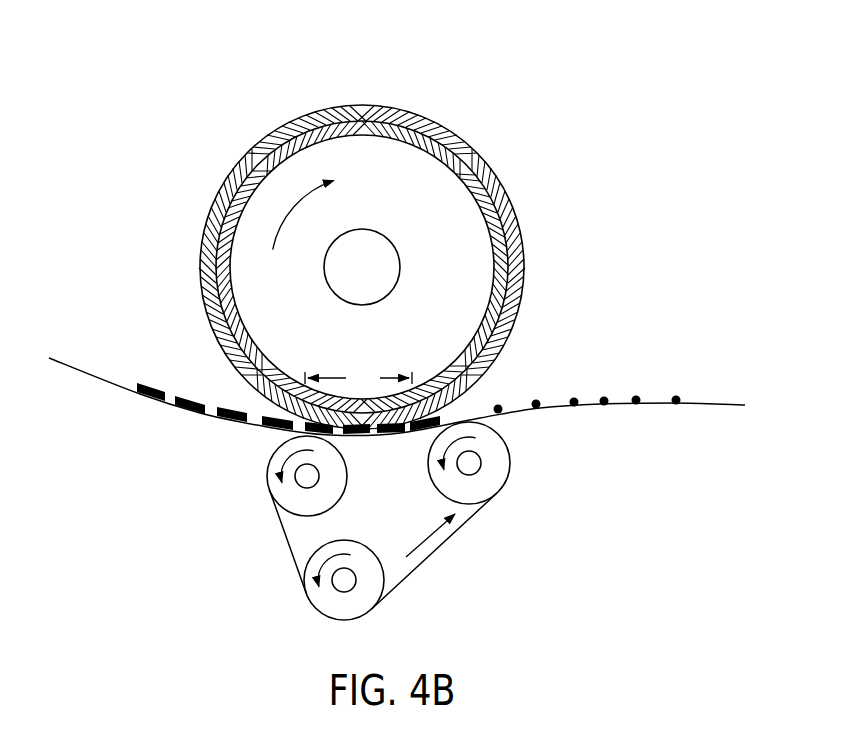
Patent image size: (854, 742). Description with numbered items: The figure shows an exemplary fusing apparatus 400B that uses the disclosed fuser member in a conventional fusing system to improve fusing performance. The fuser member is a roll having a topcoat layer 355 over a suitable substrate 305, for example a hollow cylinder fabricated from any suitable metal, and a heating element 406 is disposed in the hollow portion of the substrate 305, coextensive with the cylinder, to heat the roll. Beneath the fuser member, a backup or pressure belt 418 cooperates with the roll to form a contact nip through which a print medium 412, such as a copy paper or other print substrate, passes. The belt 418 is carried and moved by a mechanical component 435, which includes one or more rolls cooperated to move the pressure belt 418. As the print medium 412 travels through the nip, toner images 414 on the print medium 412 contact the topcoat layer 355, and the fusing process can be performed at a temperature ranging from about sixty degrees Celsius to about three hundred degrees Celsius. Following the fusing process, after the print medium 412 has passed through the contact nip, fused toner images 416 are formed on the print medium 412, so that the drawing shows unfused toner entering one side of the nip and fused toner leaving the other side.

The fusing apparatus 400B is at (463, 89).
The topcoat layer 355 is at (253, 148).
The substrate 305 is at (373, 208).
The heating element 406 is at (347, 279).
The print medium 412 is at (682, 410).
The toner images 414 is at (676, 395).
The fused toner images 416 is at (149, 384).
The backup belt 418 is at (405, 582).
The mechanical component 435 is at (252, 478).